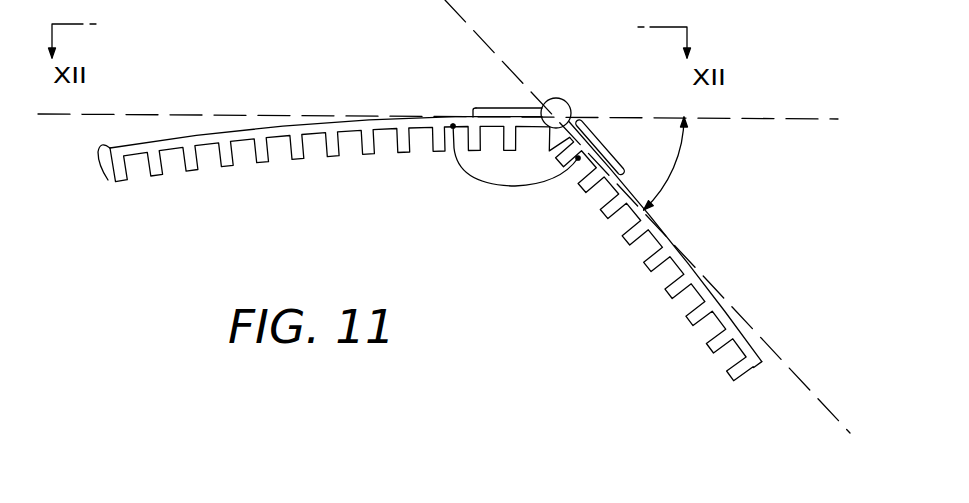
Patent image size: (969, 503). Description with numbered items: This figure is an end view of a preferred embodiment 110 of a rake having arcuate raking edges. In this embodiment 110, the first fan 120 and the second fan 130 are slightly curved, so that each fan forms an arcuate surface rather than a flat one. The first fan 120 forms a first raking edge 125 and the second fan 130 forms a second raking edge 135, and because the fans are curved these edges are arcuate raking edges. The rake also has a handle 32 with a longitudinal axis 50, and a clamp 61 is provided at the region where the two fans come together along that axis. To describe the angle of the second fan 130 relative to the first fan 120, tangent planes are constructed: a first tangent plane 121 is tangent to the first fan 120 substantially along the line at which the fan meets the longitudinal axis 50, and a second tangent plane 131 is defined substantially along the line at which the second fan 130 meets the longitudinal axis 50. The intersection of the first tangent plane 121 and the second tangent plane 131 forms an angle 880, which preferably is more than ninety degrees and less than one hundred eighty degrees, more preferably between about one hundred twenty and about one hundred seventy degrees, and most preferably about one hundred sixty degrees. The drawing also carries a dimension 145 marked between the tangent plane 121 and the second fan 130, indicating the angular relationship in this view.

The preferred embodiment 110 is at (539, 209).
The first fan 120 is at (108, 180).
The first tangent plane 121 is at (174, 114).
The first raking edge 125 is at (246, 183).
The second fan 130 is at (762, 362).
The second tangent plane 131 is at (778, 362).
The second raking edge 135 is at (619, 270).
The angle between comb members 145 is at (677, 159).
The handle 32 is at (628, 152).
The longitudinal axis 50 is at (548, 106).
The clamp 61 is at (473, 112).
The angle 880 is at (477, 170).